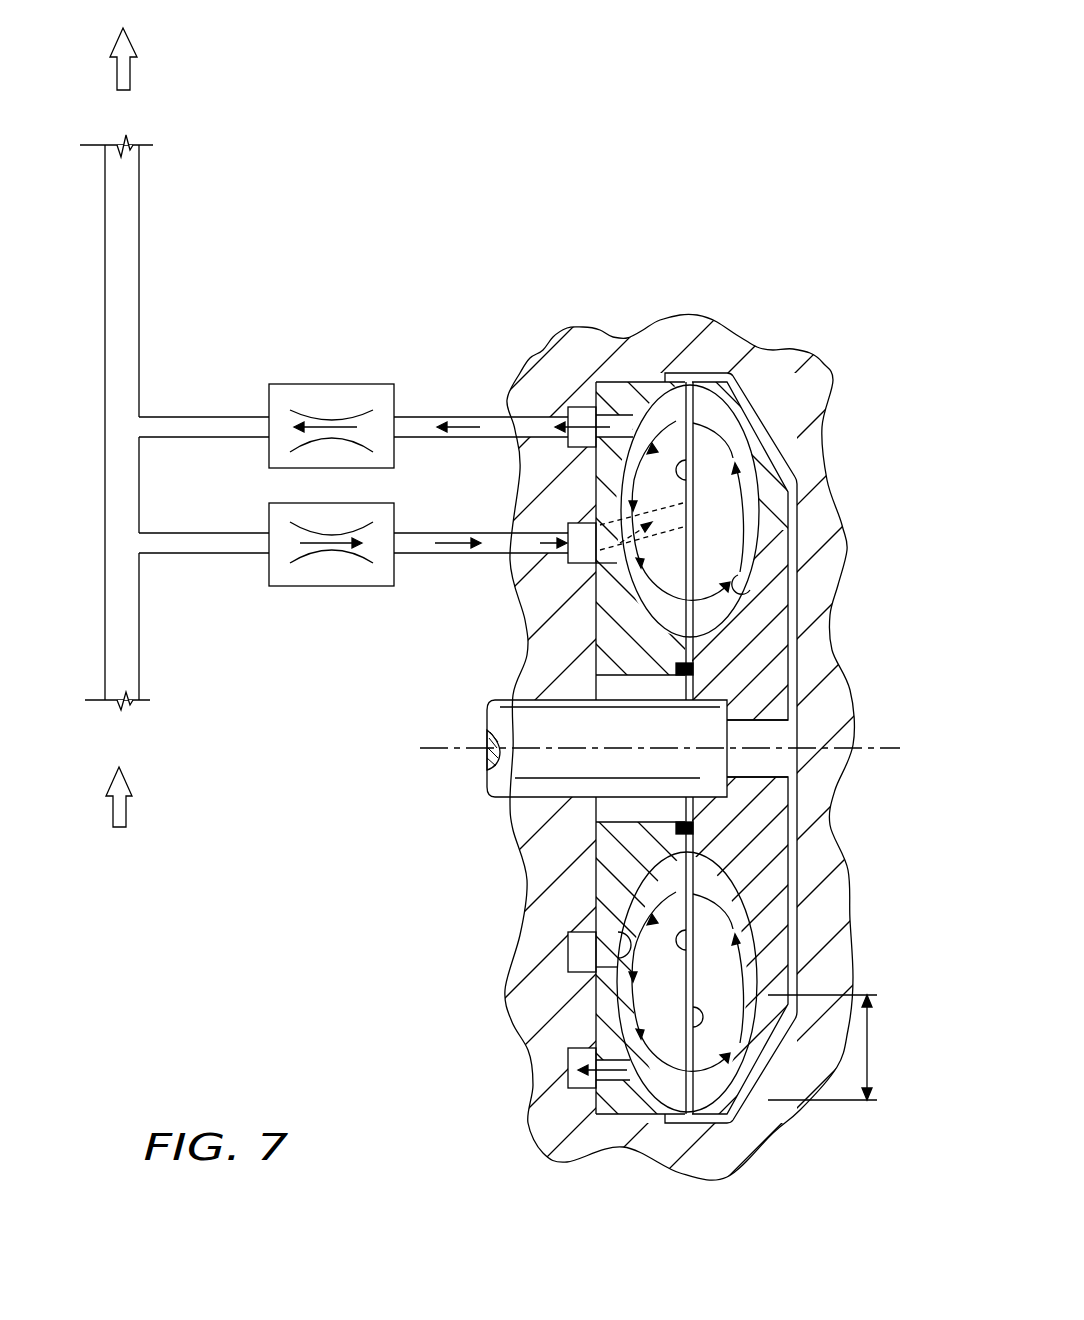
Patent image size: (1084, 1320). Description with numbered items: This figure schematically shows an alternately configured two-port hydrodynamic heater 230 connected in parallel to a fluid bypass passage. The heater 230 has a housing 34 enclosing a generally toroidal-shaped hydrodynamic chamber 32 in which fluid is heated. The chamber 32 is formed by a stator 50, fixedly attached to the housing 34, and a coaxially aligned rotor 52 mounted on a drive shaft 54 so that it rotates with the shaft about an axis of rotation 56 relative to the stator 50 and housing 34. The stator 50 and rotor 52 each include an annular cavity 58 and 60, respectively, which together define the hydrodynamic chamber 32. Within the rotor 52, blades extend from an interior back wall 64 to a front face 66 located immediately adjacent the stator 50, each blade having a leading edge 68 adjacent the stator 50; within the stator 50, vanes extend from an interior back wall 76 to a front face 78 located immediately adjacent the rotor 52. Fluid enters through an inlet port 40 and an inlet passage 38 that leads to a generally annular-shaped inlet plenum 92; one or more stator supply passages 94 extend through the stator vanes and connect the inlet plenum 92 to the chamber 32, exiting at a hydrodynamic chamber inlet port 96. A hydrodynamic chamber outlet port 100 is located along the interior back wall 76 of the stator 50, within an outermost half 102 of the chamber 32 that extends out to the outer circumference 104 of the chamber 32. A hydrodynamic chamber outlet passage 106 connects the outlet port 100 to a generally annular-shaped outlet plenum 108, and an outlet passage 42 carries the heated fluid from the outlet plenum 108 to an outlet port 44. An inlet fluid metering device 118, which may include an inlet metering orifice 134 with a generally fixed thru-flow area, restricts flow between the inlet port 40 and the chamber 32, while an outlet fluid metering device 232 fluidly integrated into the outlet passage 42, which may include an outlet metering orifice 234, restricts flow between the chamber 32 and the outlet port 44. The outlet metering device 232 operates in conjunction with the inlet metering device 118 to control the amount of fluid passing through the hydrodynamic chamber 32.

The two-port hydrodynamic heater 230 is at (780, 226).
The outlet fluid metering device 232 is at (323, 384).
The outlet metering orifice 234 is at (332, 435).
The inlet fluid metering device 118 is at (323, 586).
The inlet metering orifice 134 is at (347, 557).
The outlet port 44 is at (140, 418).
The outlet passage 42 is at (413, 417).
The inlet port 40 is at (143, 542).
The inlet passage 38 is at (437, 557).
The housing 34 is at (837, 393).
The hydrodynamic chamber 32 is at (766, 553).
The rotor 52 is at (797, 632).
The hydrodynamic chamber inlet port 96 is at (693, 527).
The annular cavity of stator 58 is at (678, 583).
The annular cavity of rotor 60 is at (723, 565).
The front face of rotor 66 is at (684, 475).
The interior back wall of rotor 64 is at (747, 597).
The leading edge of rotor blade 68 is at (691, 967).
The front face of stator 78 is at (686, 1033).
The interior back wall of stator 76 is at (617, 966).
The axis of rotation 56 is at (880, 748).
The drive shaft 54 is at (540, 797).
The stator 50 is at (590, 633).
The outer circumference of hydrodynamic chamber 104 is at (725, 1177).
The outlet plenum 108 is at (588, 400).
The hydrodynamic chamber outlet passage 106 is at (627, 410).
The hydrodynamic chamber outlet port 100 is at (660, 410).
The inlet plenum 92 is at (590, 523).
The stator supply passage 94 is at (613, 548).
The outermost half of hydrodynamic chamber 102 is at (870, 1060).